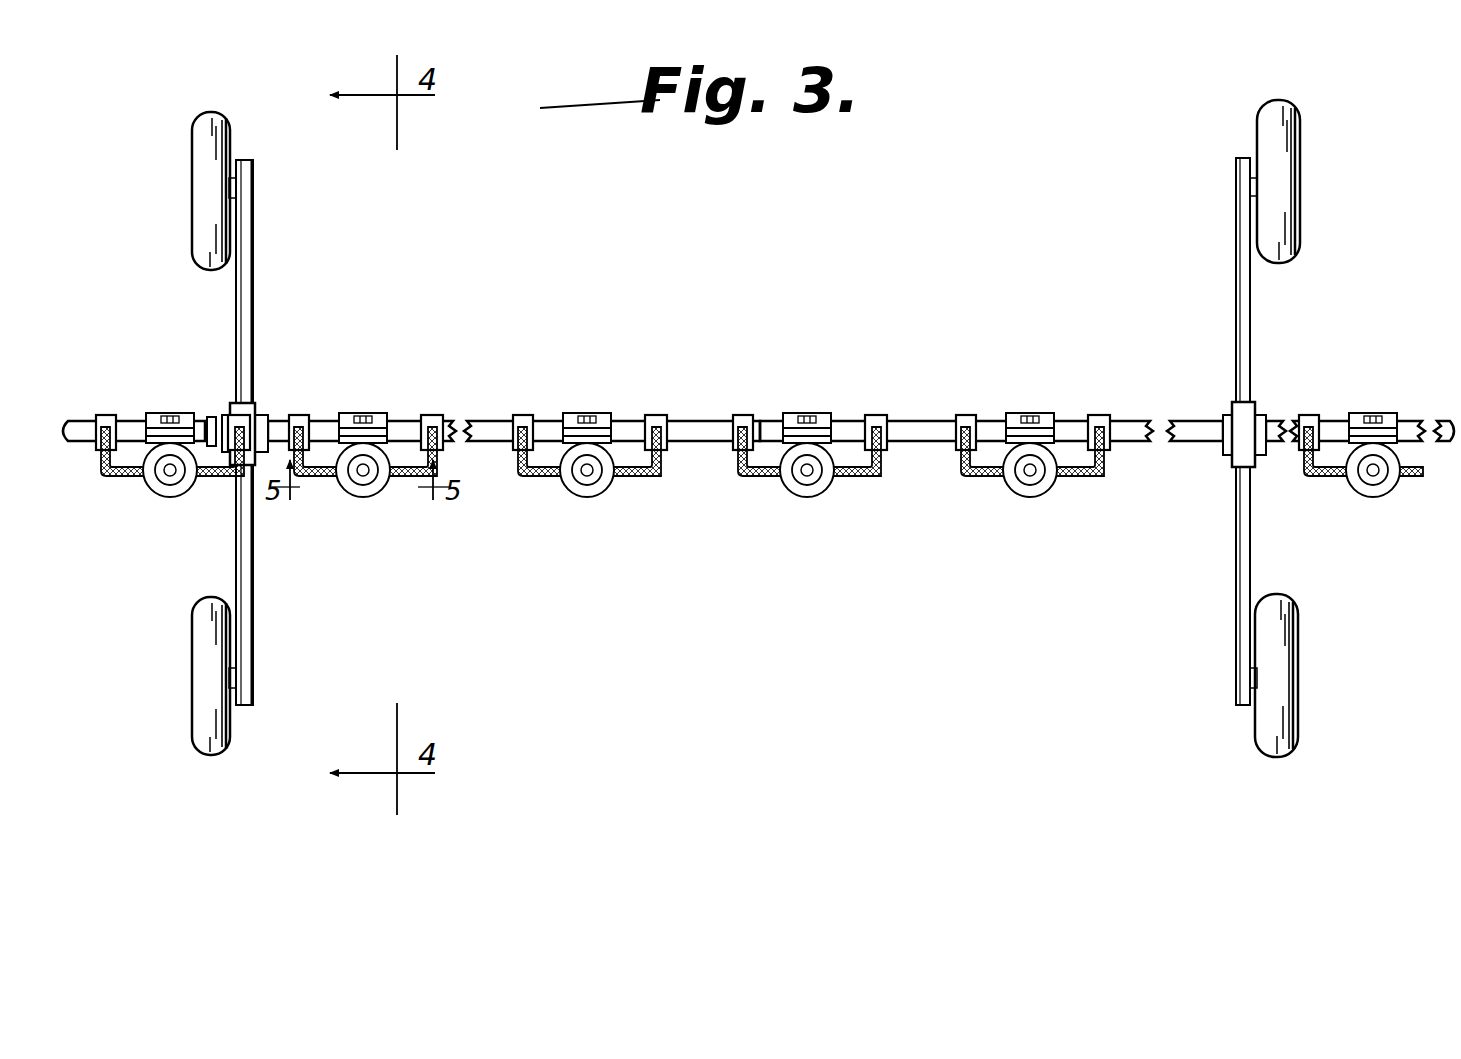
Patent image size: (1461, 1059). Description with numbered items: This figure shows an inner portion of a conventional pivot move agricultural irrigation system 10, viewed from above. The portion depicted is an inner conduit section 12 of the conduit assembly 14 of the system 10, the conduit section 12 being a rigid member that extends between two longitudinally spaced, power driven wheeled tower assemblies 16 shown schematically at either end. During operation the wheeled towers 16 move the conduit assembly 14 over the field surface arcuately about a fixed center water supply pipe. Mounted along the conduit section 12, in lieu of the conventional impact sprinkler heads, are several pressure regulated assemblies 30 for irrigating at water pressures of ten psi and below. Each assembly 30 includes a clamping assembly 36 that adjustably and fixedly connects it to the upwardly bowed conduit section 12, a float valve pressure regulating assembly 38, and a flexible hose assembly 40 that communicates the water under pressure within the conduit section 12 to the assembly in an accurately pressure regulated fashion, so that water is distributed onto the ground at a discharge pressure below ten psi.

The pivot move agricultural irrigation system 10 is at (1180, 232).
The conduit section 12 is at (710, 427).
The conduit assembly 14 is at (918, 424).
The wheeled tower assembly 16 is at (262, 353).
The pressure regulated assembly 30 is at (749, 478).
The clamping assembly 36 is at (205, 365).
The float valve pressure regulating assembly 38 is at (190, 495).
The flexible hose assembly 40 is at (120, 478).